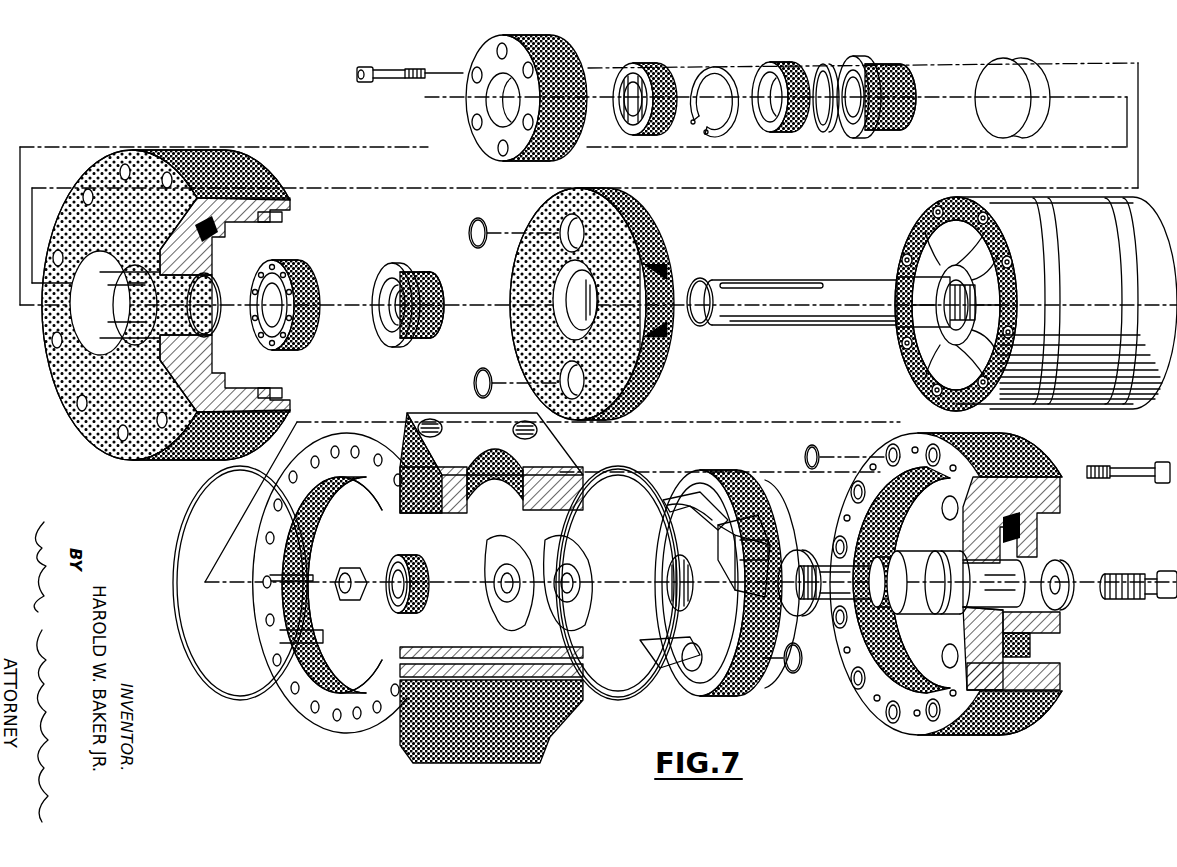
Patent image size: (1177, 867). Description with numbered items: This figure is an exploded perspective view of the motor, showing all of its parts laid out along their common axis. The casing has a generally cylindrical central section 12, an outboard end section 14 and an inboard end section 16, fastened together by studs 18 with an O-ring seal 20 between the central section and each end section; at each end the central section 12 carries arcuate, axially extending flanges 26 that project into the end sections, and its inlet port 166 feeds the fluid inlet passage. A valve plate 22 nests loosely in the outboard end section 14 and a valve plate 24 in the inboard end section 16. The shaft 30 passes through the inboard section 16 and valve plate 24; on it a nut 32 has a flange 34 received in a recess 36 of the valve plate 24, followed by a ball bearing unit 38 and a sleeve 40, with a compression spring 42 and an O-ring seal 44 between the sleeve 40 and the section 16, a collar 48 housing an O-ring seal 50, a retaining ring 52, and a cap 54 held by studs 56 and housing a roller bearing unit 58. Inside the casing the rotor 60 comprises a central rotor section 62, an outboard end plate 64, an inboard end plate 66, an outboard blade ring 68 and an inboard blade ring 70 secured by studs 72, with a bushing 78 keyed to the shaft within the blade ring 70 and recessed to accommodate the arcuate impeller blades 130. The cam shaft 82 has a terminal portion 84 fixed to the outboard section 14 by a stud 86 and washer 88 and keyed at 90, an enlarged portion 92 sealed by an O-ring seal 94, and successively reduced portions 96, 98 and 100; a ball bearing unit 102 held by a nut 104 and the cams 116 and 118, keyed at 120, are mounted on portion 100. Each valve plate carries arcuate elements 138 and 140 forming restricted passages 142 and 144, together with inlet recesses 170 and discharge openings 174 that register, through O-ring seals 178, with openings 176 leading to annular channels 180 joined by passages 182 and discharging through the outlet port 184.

The central section 12 is at (446, 413).
The outboard end section 14 is at (1057, 470).
The inboard end section 16 is at (66, 208).
The studs 18 is at (1124, 468).
The O-ring seal 20 is at (180, 520).
The valve plate 22 is at (726, 470).
The valve plate 24 is at (662, 252).
The flanges 26 is at (385, 512).
The shaft 30 is at (766, 280).
The nut 32 is at (426, 322).
The flange 34 is at (392, 347).
The recess 36 is at (560, 320).
The ball bearing unit 38 is at (305, 318).
The sleeve 40 is at (905, 104).
The compression spring 42 is at (1000, 62).
The O-ring seal 44 is at (218, 290).
The collar 48 is at (777, 62).
The O-ring seal 50 is at (829, 120).
The retaining ring 52 is at (715, 66).
The cap 54 is at (584, 62).
The studs 56 is at (390, 69).
The roller bearing unit 58 is at (645, 62).
The rotor 60 is at (925, 207).
The central rotor section 62 is at (1057, 200).
The outboard end plate 64 is at (1103, 200).
The inboard end plate 66 is at (1010, 200).
The outboard blade ring 68 is at (1143, 217).
The inboard blade ring 70 is at (920, 238).
The studs 72 is at (904, 260).
The bushing 78 is at (936, 302).
The cam shaft 82 is at (908, 556).
The terminal portion 84 is at (962, 612).
The stud 86 is at (1150, 576).
The washer 88 is at (1076, 583).
The key 90 is at (1008, 567).
The enlarged diameter portion 92 is at (941, 556).
The O-ring seal 94 is at (776, 552).
The cam shaft portion 96 is at (893, 556).
The cam shaft portion 98 is at (875, 606).
The cam shaft portion 100 is at (818, 600).
The ball bearing unit 102 is at (425, 606).
The nut 104 is at (352, 601).
The cam 116 is at (508, 618).
The cam 118 is at (582, 616).
The key 120 is at (806, 548).
The impeller blade 130 is at (920, 345).
The arcuately shaped element 138 is at (687, 510).
The arcuately shaped element 140 is at (744, 556).
The restricted passage 142 is at (663, 528).
The restricted passage 144 is at (645, 646).
The inlet port 166 is at (522, 424).
The arcuate recesses 170 is at (700, 278).
The openings 174 is at (583, 232).
The openings 176 is at (942, 508).
The O-ring seals 178 is at (468, 233).
The annular channels 180 is at (218, 232).
The passages 182 is at (268, 222).
The fluid outlet port 184 is at (1046, 612).